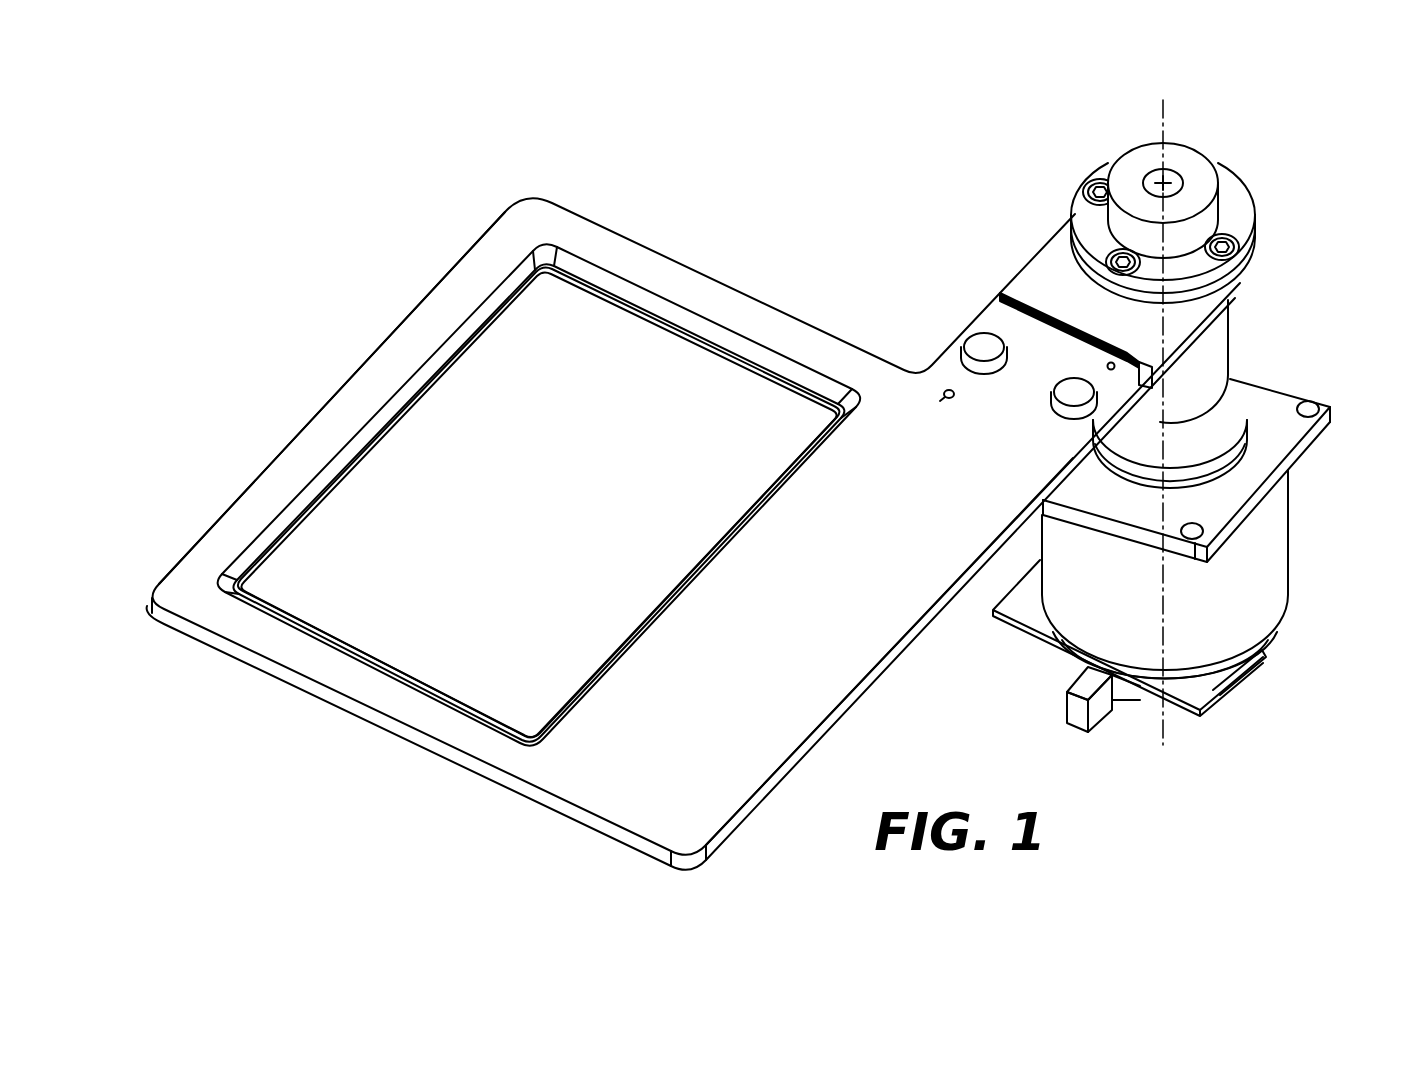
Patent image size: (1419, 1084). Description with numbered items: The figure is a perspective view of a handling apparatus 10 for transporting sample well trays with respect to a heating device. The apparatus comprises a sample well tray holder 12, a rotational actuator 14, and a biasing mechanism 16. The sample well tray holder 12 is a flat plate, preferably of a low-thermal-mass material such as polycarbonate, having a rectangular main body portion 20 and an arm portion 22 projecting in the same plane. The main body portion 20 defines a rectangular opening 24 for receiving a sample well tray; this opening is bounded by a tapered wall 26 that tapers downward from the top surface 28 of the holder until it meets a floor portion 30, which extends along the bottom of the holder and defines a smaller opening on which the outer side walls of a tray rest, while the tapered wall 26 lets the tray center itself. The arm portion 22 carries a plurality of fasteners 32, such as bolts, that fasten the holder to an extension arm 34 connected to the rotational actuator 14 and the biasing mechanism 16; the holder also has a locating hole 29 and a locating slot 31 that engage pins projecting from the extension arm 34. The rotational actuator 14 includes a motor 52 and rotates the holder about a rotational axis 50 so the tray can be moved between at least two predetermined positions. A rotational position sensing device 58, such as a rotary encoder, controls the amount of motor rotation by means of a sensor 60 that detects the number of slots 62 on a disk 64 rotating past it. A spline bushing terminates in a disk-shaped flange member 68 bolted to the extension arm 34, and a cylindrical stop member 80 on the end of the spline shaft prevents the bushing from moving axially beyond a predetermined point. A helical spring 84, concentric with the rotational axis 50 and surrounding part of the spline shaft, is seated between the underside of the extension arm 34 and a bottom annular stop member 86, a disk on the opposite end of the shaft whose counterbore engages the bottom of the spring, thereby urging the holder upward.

The handling apparatus 10 is at (848, 212).
The sample well tray holder 12 is at (422, 779).
The rotational actuator 14 is at (1312, 510).
The biasing mechanism 16 is at (1266, 309).
The main body portion 20 is at (855, 636).
The arm portion 22 is at (1074, 390).
The rectangular opening 24 is at (360, 604).
The tapered wall 26 is at (643, 298).
The top surface 28 is at (348, 412).
The locating hole 29 is at (1113, 363).
The floor portion 30 is at (720, 345).
The locating slot 31 is at (950, 396).
The fasteners 32 is at (985, 352).
The extension arm 34 is at (1055, 285).
The rotational axis 50 is at (1167, 133).
The motor 52 is at (1283, 553).
The rotational position sensing device 58 is at (1118, 730).
The sensor 60 is at (1068, 705).
The slots 62 is at (1262, 662).
The disk 64 is at (1232, 688).
The flange member 68 is at (1233, 216).
The cylindrical stop member 80 is at (1193, 187).
The helical spring 84 is at (1215, 342).
The bottom annular stop member 86 is at (1287, 391).